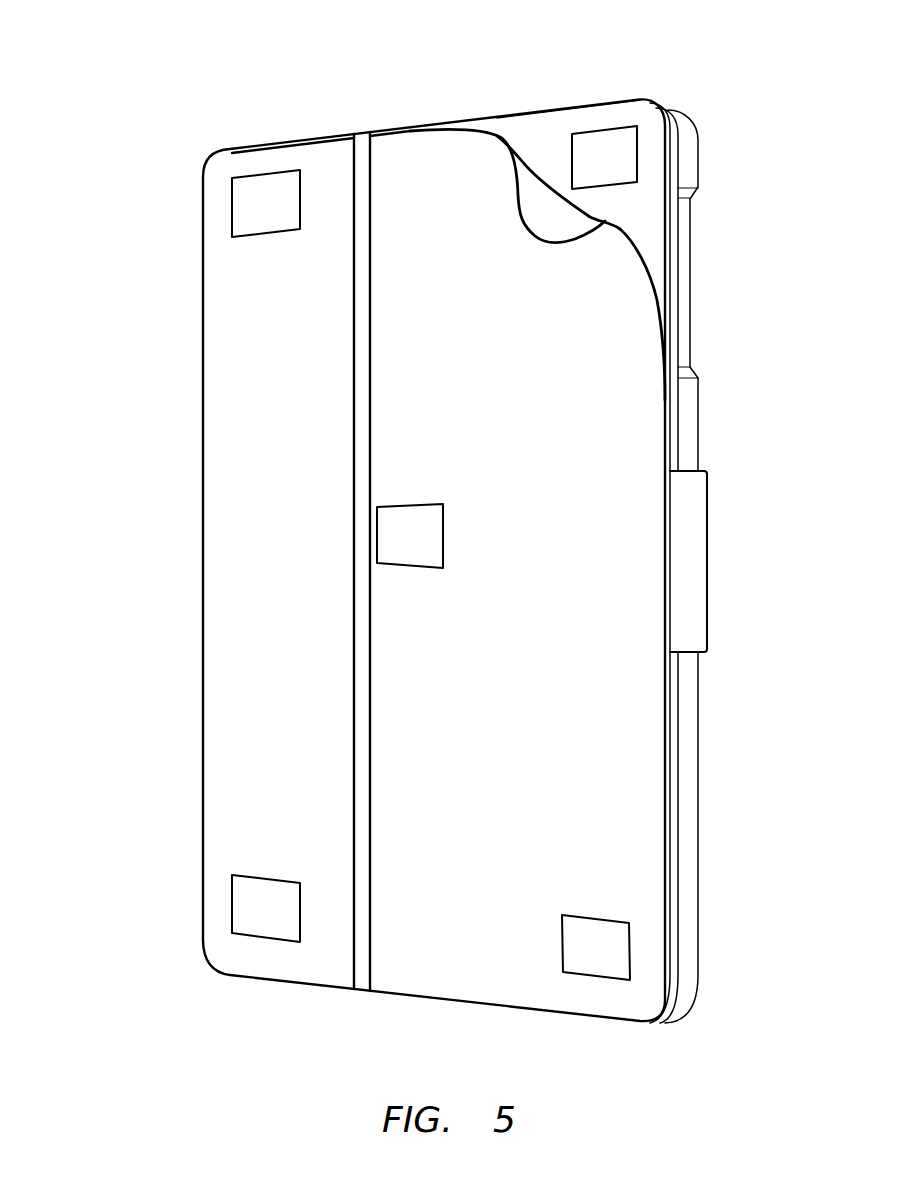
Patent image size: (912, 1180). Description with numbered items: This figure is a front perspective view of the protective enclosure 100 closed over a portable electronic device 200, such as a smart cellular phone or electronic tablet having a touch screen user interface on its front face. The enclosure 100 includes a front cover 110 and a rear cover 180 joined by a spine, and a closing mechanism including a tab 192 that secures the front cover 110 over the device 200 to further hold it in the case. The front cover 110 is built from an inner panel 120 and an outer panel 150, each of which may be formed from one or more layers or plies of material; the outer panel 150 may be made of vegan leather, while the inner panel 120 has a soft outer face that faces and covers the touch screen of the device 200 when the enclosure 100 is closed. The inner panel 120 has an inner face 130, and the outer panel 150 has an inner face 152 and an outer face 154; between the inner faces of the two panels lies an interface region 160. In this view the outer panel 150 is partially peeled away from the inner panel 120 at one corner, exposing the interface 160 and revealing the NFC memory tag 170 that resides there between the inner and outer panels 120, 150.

The protective enclosure 100 is at (156, 351).
The front cover 110 is at (240, 583).
The inner panel 120 is at (647, 228).
The inner face of inner panel 130 is at (558, 127).
The outer panel 150 is at (568, 228).
The inner face of outer panel 152 is at (528, 180).
The outer face of outer panel 154 is at (513, 192).
The interface region 160 is at (605, 221).
The NFC memory tag 170 is at (613, 147).
The rear cover 180 is at (698, 777).
The tab 192 is at (707, 562).
The portable electronic device 200 is at (690, 283).